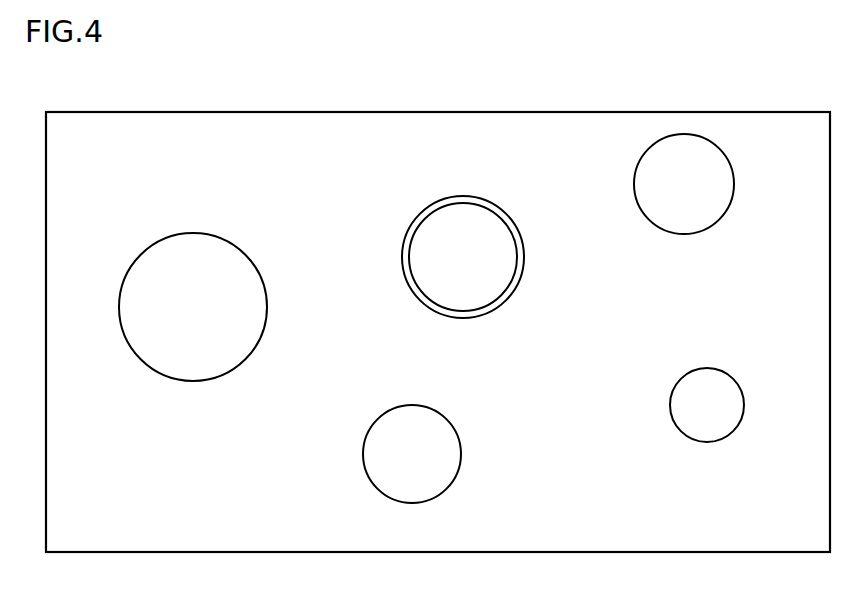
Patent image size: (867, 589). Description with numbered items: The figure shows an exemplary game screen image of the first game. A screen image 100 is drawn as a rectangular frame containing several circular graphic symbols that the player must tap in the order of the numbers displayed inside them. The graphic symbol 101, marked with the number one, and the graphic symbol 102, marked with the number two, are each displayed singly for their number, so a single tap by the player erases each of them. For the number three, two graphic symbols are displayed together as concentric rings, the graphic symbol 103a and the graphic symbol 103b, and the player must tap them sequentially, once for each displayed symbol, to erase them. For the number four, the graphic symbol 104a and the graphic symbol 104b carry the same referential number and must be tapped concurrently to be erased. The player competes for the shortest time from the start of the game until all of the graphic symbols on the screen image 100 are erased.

The screen image 100 is at (789, 111).
The graphic symbol 101 is at (195, 233).
The graphic symbol 102 is at (708, 369).
The graphic symbol 103a is at (465, 196).
The graphic symbol 103b is at (462, 312).
The graphic symbol 104a is at (412, 404).
The graphic symbol 104b is at (682, 233).